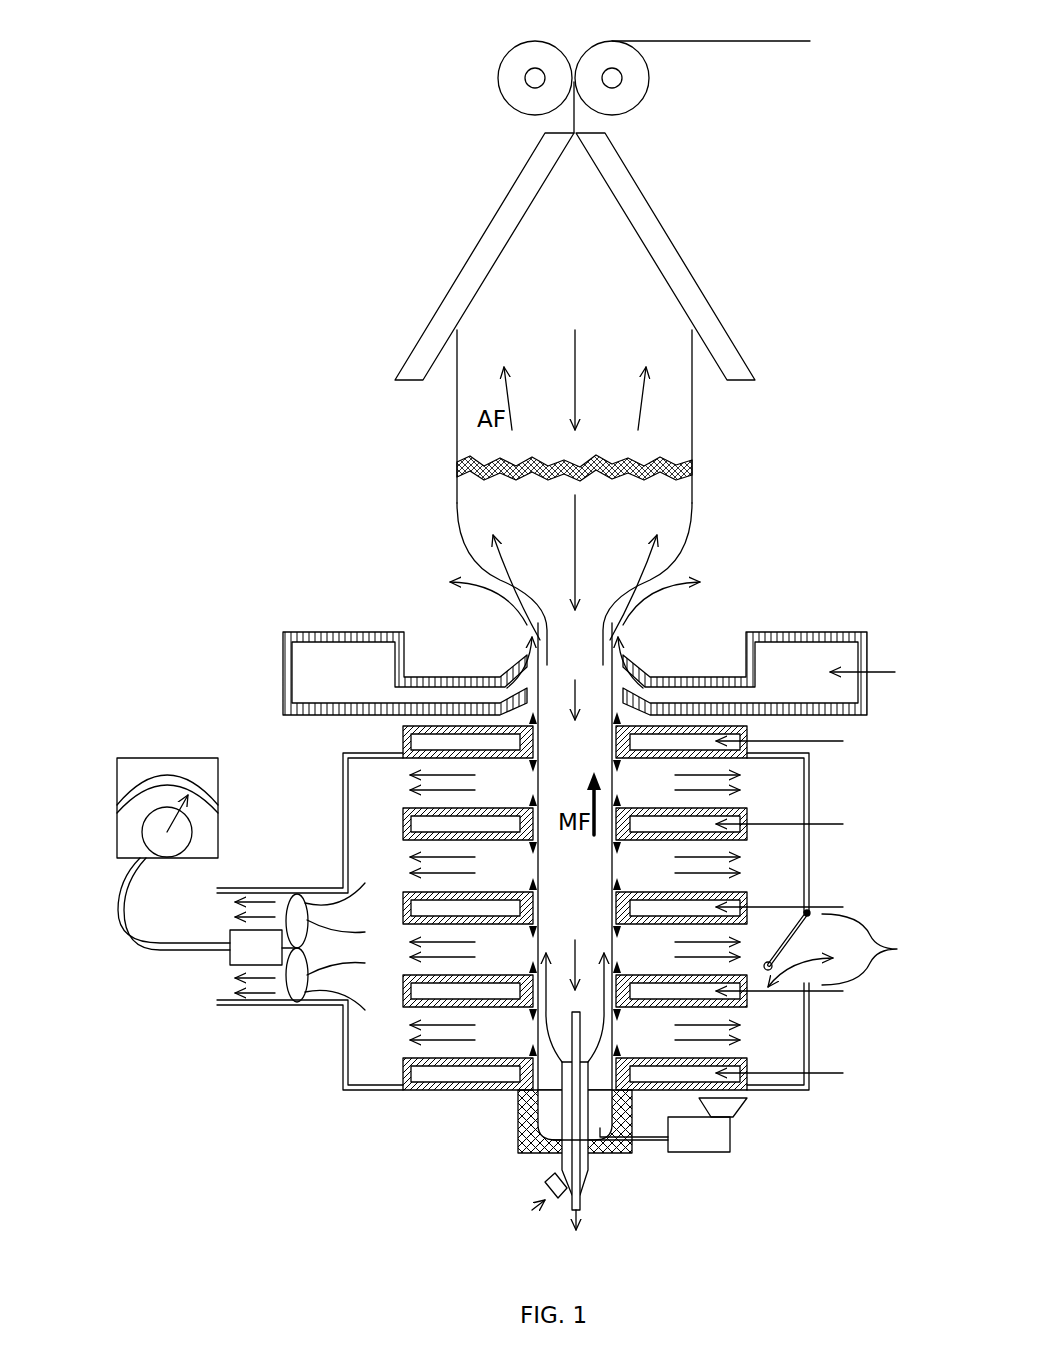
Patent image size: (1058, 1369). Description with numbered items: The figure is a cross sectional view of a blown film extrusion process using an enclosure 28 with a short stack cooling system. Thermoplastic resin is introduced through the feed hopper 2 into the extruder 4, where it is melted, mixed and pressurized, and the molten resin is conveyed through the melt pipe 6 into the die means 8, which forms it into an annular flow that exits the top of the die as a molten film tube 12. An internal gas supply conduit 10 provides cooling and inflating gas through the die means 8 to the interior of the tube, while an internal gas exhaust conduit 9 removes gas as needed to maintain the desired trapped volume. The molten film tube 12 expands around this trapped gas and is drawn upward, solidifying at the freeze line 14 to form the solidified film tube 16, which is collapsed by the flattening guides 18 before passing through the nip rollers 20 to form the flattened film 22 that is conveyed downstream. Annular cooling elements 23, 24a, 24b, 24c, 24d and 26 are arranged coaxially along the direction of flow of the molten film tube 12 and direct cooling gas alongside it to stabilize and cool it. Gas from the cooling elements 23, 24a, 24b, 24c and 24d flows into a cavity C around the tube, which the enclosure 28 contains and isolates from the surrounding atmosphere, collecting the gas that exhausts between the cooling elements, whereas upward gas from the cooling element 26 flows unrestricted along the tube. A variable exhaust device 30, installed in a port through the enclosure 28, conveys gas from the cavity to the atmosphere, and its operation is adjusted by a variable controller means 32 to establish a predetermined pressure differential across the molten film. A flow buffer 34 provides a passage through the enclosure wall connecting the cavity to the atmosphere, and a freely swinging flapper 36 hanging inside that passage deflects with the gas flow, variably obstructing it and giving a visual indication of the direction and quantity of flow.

The feed hopper 2 is at (723, 1107).
The extruder 4 is at (712, 1140).
The melt pipe 6 is at (652, 1140).
The die means 8 is at (517, 1118).
The internal gas exhaust conduit 9 is at (580, 1195).
The internal gas supply conduit 10 is at (548, 1178).
The molten film tube 12 is at (692, 513).
The freeze line 14 is at (458, 467).
The solidified film tube 16 is at (692, 413).
The flattening guides 18 is at (472, 253).
The nip rollers 20 is at (503, 97).
The flattened film 22 is at (658, 35).
The cooling element 23 is at (420, 1077).
The cooling element 24a is at (422, 997).
The cooling element 24b is at (422, 905).
The cooling element 24c is at (423, 822).
The cooling element 24d is at (427, 739).
The cooling element 26 is at (307, 652).
The enclosure 28 is at (340, 1073).
The variable exhaust device 30 is at (228, 965).
The variable controller means 32 is at (117, 846).
The flow buffer 34 is at (878, 949).
The flapper 36 is at (792, 940).